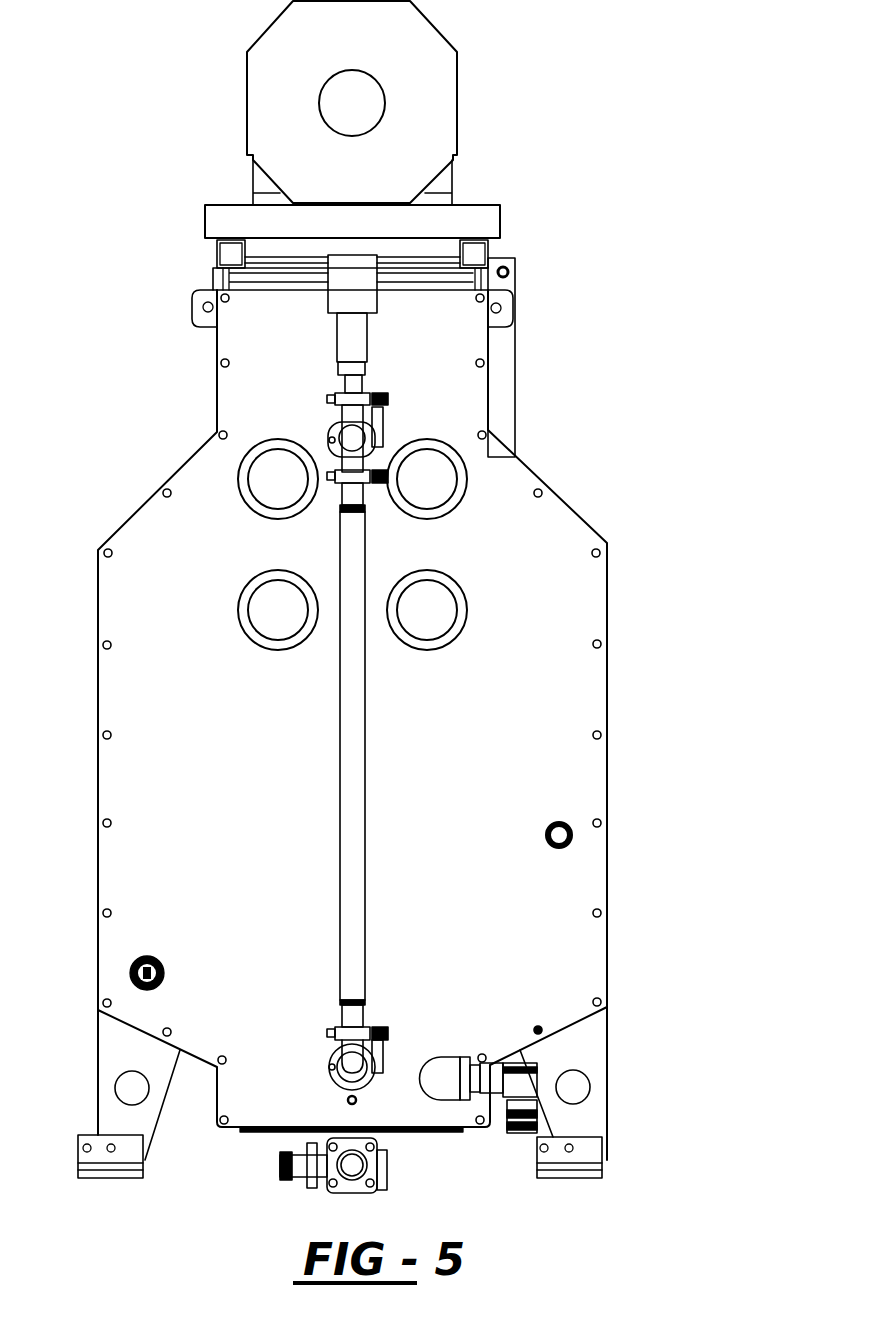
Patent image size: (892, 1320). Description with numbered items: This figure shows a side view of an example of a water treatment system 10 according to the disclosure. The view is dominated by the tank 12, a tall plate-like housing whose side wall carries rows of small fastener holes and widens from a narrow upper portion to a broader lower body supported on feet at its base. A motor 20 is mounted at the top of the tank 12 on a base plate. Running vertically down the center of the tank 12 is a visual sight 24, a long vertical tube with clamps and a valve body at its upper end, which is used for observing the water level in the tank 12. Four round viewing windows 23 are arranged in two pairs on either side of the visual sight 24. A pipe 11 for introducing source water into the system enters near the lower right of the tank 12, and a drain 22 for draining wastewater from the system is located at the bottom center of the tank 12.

The system 10 is at (138, 99).
The motor 20 is at (458, 105).
The tank 12 is at (607, 875).
The viewing window 23 is at (468, 485).
The visual sight 24 is at (365, 778).
The pipe 11 is at (530, 1077).
The drain 22 is at (390, 1183).